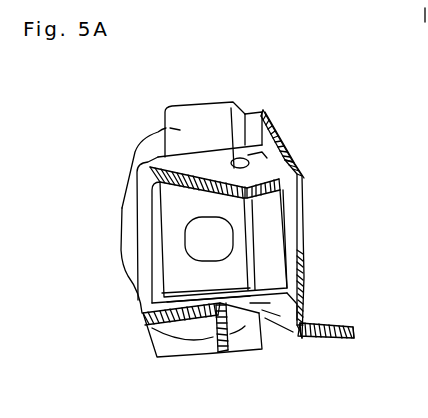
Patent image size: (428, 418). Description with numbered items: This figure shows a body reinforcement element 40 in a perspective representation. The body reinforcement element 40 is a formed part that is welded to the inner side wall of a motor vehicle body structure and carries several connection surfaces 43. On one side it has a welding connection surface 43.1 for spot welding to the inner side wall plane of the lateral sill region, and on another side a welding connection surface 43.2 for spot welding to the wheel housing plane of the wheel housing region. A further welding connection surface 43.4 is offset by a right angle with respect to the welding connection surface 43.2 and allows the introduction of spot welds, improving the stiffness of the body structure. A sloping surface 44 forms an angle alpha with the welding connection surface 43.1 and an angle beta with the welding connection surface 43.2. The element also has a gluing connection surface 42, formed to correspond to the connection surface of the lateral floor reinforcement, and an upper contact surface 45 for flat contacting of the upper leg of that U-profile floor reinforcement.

The body reinforcement element 40 is at (289, 77).
The gluing connection surface 42 is at (265, 222).
The flange 43 is at (312, 307).
The welding connection surface 43.1 is at (120, 262).
The welding connection surface 43.2 is at (290, 150).
The welding connection surface 43.4 is at (328, 314).
The sloping surface 44 is at (183, 205).
The upper contact surface 45 is at (220, 165).